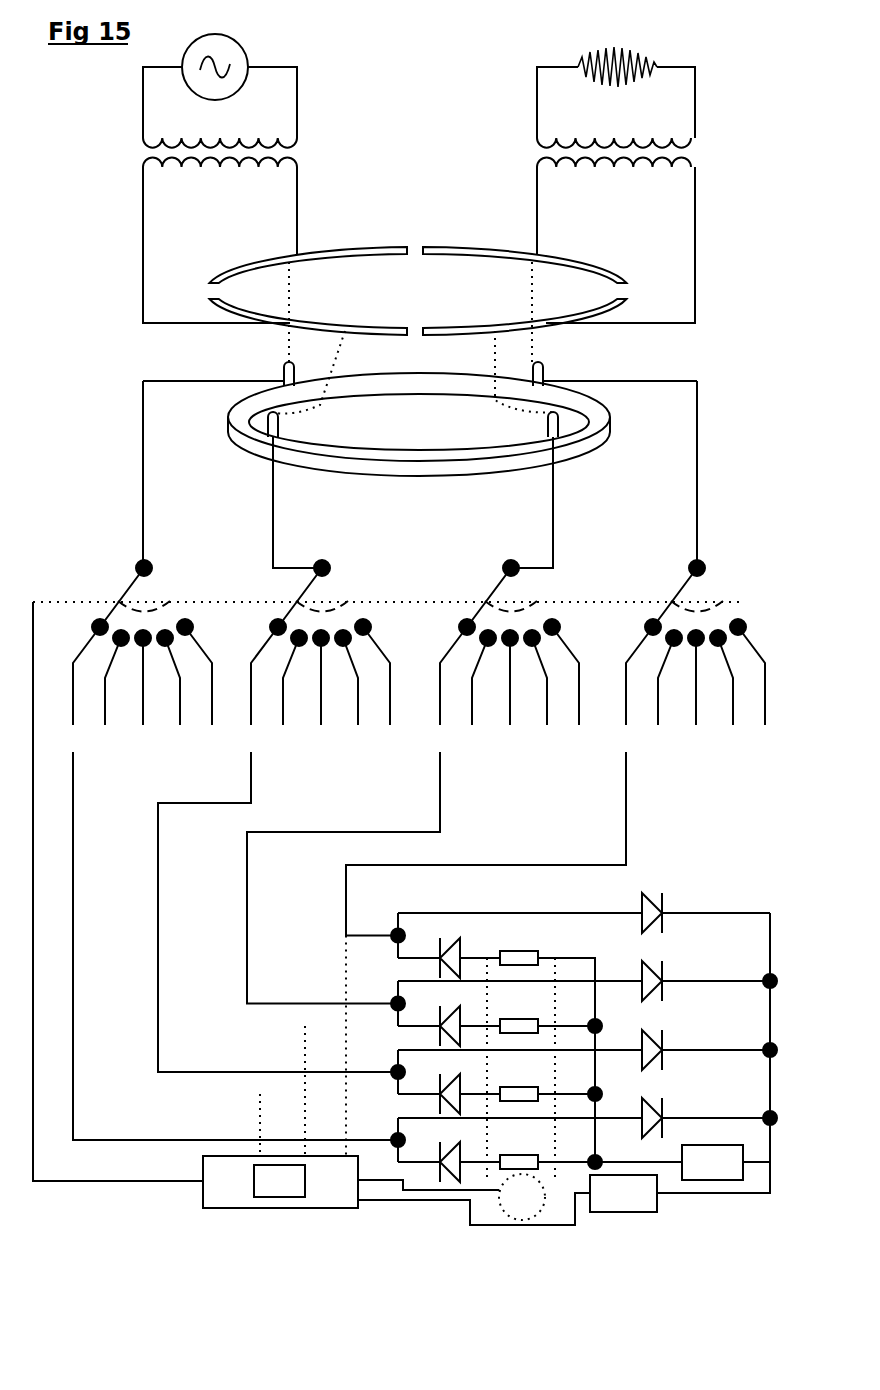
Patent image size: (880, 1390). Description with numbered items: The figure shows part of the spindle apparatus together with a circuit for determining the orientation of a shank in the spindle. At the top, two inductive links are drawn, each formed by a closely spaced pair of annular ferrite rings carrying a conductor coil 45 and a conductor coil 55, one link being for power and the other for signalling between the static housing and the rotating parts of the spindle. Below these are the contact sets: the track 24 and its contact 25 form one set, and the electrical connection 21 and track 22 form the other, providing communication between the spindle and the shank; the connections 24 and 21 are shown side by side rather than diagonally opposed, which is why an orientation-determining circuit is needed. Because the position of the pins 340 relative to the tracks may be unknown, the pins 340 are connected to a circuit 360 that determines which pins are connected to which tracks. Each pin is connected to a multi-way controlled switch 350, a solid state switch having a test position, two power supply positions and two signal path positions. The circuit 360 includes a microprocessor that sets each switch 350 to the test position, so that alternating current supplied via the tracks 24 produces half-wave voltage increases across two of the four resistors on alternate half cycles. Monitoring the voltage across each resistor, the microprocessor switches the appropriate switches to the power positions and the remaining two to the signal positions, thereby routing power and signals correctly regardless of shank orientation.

The electrical connection 21 is at (537, 188).
The track 22 is at (512, 250).
The track 24 is at (356, 250).
The contact 25 is at (143, 262).
The conductor coil 45 is at (212, 138).
The conductor coil 55 is at (215, 166).
The pins 340 is at (283, 376).
The multi-way controlled switch 350 is at (133, 590).
The circuit 360 is at (673, 867).